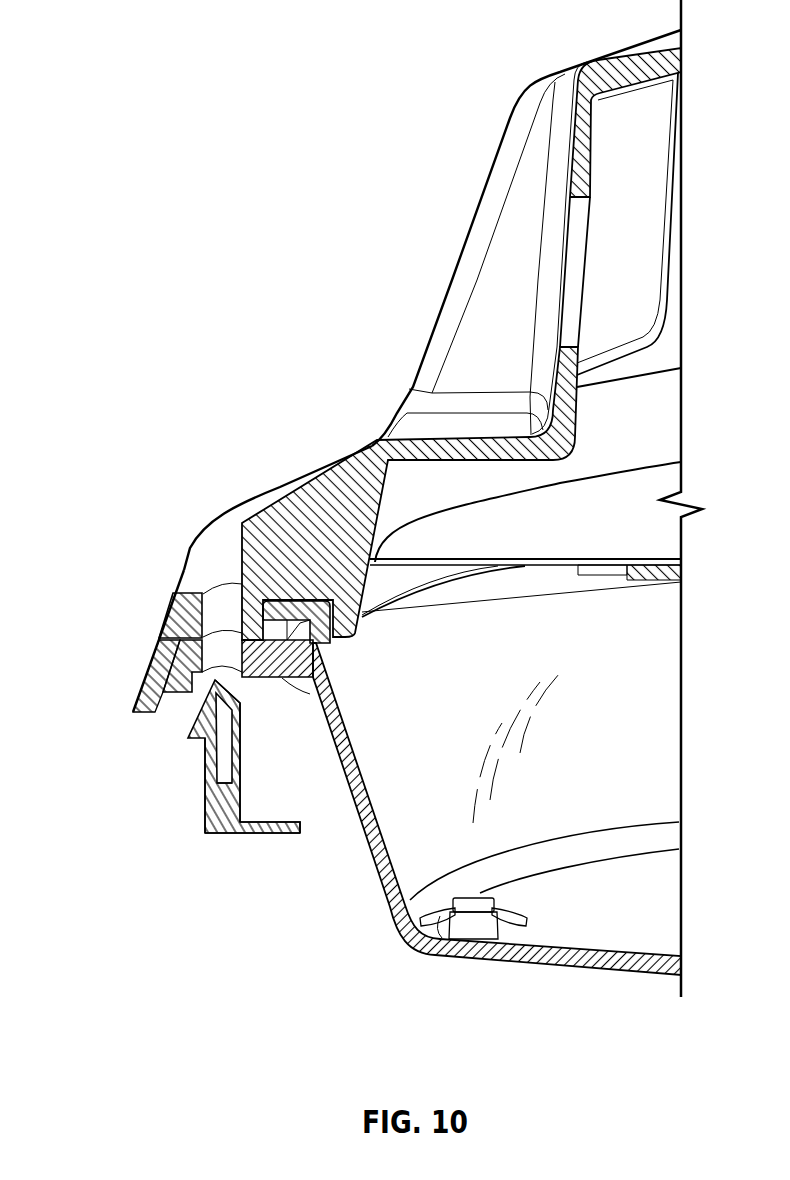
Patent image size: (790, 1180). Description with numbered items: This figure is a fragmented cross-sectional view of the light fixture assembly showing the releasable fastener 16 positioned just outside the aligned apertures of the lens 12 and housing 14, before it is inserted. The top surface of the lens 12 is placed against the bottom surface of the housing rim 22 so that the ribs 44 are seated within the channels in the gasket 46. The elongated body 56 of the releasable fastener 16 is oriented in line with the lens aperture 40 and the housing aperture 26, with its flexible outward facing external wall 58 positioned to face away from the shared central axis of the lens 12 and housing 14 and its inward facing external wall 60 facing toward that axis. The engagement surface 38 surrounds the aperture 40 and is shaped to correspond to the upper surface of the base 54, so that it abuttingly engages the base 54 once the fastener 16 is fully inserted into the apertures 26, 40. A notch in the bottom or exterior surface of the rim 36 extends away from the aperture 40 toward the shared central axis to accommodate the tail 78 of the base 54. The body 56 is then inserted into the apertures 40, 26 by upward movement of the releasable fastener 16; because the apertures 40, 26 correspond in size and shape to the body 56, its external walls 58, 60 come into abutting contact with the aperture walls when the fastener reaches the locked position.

The lens 12 is at (383, 928).
The housing 14 is at (367, 55).
The releasable fastener 16 is at (191, 788).
The housing rim 22 is at (313, 480).
The housing aperture 26 is at (222, 608).
The rim 36 is at (177, 693).
The engagement surface 38 is at (310, 694).
The aperture 40 is at (222, 657).
The ribs 44 is at (318, 672).
The gasket 46 is at (328, 643).
The base 54 is at (223, 834).
The elongated body 56 is at (232, 795).
The flexible outward facing external wall 58 is at (203, 782).
The inward facing external wall 60 is at (242, 760).
The tail 78 is at (272, 818).